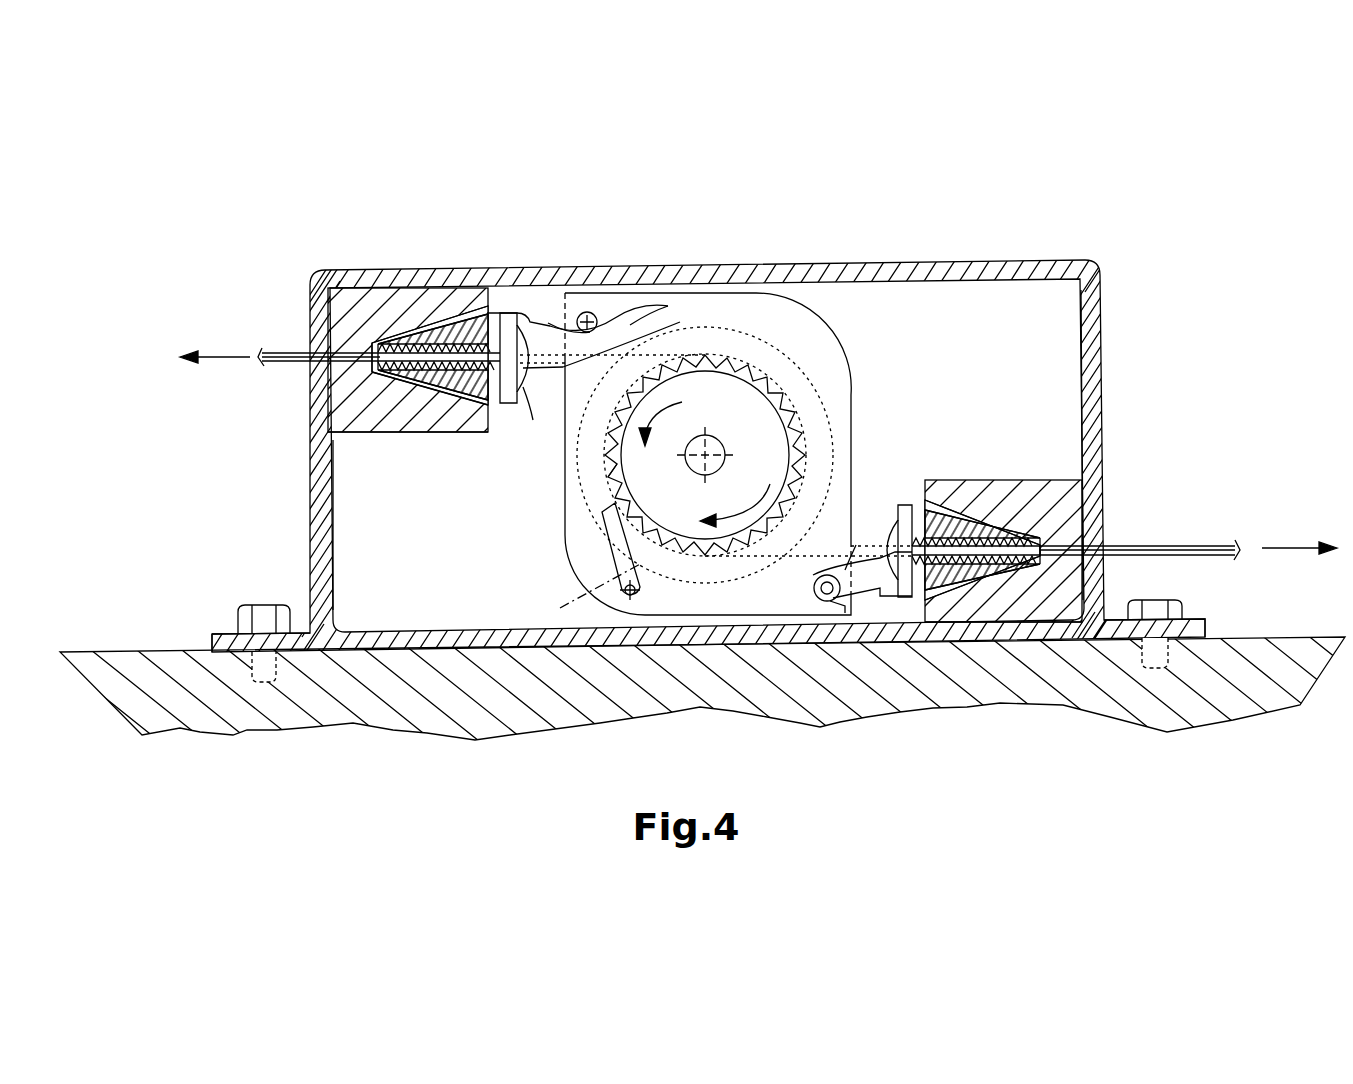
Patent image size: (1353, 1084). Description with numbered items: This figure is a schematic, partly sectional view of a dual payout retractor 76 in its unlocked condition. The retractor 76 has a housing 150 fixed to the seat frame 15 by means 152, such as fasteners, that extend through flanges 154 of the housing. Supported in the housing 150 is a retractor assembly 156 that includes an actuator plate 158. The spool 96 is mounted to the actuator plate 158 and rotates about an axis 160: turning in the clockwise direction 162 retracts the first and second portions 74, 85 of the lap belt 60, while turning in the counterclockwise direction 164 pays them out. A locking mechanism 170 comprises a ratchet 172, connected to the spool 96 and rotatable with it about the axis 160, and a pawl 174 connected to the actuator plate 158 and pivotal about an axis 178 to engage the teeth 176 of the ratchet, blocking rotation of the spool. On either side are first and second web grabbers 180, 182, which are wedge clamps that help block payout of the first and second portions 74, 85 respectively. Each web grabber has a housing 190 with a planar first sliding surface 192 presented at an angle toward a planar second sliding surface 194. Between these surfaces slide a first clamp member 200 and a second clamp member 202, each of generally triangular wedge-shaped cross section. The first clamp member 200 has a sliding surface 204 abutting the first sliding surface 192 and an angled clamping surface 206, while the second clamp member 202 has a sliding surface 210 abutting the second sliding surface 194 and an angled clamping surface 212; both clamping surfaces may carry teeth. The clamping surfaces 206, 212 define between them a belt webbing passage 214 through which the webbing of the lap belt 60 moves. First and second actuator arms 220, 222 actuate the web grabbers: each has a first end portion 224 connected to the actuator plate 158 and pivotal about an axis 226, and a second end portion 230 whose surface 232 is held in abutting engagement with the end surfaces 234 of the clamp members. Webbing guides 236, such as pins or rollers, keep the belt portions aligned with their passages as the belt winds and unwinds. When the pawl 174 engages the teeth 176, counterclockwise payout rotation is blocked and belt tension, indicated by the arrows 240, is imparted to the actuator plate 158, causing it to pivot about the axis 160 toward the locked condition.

The seat frame 15 is at (410, 700).
The lap belt 60 is at (803, 412).
The first portion of the lap belt 74 is at (1235, 545).
The dual payout retractor 76 is at (448, 160).
The second portion of the lap belt 85 is at (282, 353).
The spool 96 is at (815, 390).
The housing 150 is at (322, 540).
The means 152 is at (265, 618).
The flanges 154 is at (300, 652).
The retractor assembly 156 is at (875, 408).
The actuator plate 158 is at (822, 335).
The axis 160 is at (716, 458).
The clockwise direction 162 is at (770, 484).
The counterclockwise direction 164 is at (682, 402).
The locking mechanism 170 is at (598, 612).
The ratchet 172 is at (612, 478).
The pawl 174 is at (580, 596).
The teeth 176 is at (612, 510).
The axis 178 is at (640, 595).
The first web grabber 180 is at (1040, 400).
The second web grabber 182 is at (430, 475).
The housing 190 is at (392, 322).
The first sliding surface 192 is at (398, 348).
The second sliding surface 194 is at (440, 385).
The first clamp member 200 is at (490, 344).
The second clamp member 202 is at (470, 396).
The sliding surface 204 is at (418, 340).
The clamping surface 206 is at (380, 355).
The sliding surface 210 is at (412, 380).
The clamping surface 212 is at (332, 432).
The belt webbing passage 214 is at (348, 362).
The first actuator arm 220 is at (815, 583).
The second actuator arm 222 is at (550, 330).
The first end portion 224 is at (598, 318).
The axis 226 is at (592, 320).
The second end portion 230 is at (522, 318).
The surface 232 is at (505, 400).
The end surfaces 234 is at (520, 396).
The webbing guides 236 is at (600, 323).
The arrows 240 is at (751, 433).